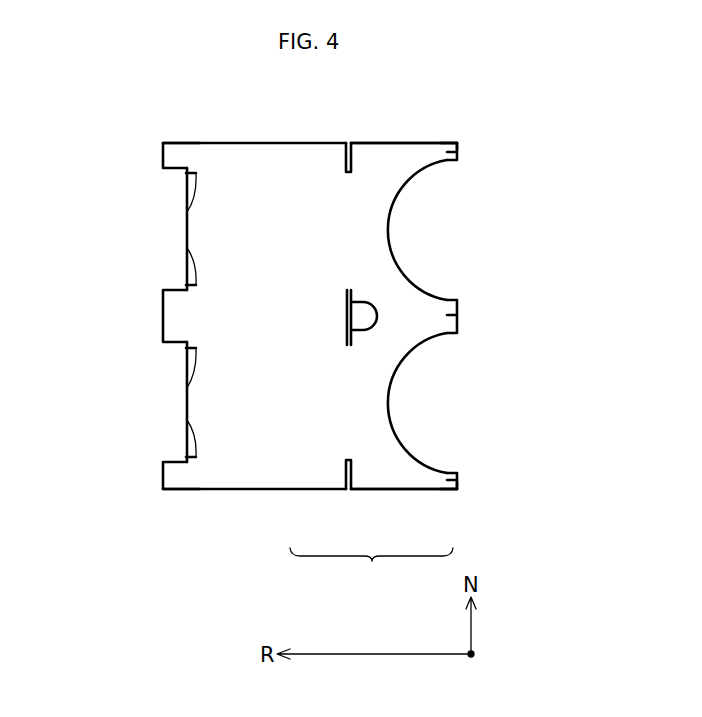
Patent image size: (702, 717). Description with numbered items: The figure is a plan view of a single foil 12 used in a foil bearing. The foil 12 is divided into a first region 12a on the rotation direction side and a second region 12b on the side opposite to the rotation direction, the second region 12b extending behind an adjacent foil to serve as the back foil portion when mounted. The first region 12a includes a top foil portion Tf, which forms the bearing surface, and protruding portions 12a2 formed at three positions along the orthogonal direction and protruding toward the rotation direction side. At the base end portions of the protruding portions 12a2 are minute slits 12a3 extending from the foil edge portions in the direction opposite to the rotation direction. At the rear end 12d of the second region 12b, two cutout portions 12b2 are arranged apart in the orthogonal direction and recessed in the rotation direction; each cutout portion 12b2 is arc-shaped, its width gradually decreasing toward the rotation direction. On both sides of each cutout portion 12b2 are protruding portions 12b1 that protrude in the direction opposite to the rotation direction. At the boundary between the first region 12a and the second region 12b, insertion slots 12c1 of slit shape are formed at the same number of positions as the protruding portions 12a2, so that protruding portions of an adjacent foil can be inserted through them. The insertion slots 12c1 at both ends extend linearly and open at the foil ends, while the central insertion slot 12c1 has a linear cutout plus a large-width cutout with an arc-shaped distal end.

The foil 12 is at (310, 367).
The first region 12a is at (312, 458).
The protruding portions 12a2 is at (176, 157).
The minute slits 12a3 is at (188, 259).
The second region 12b is at (385, 473).
The protruding portions 12b1 is at (457, 152).
The cutout portions 12b2 is at (397, 194).
The insertion slots 12c1 is at (353, 157).
The rear end 12d is at (458, 146).
The top foil portion Tf is at (255, 183).